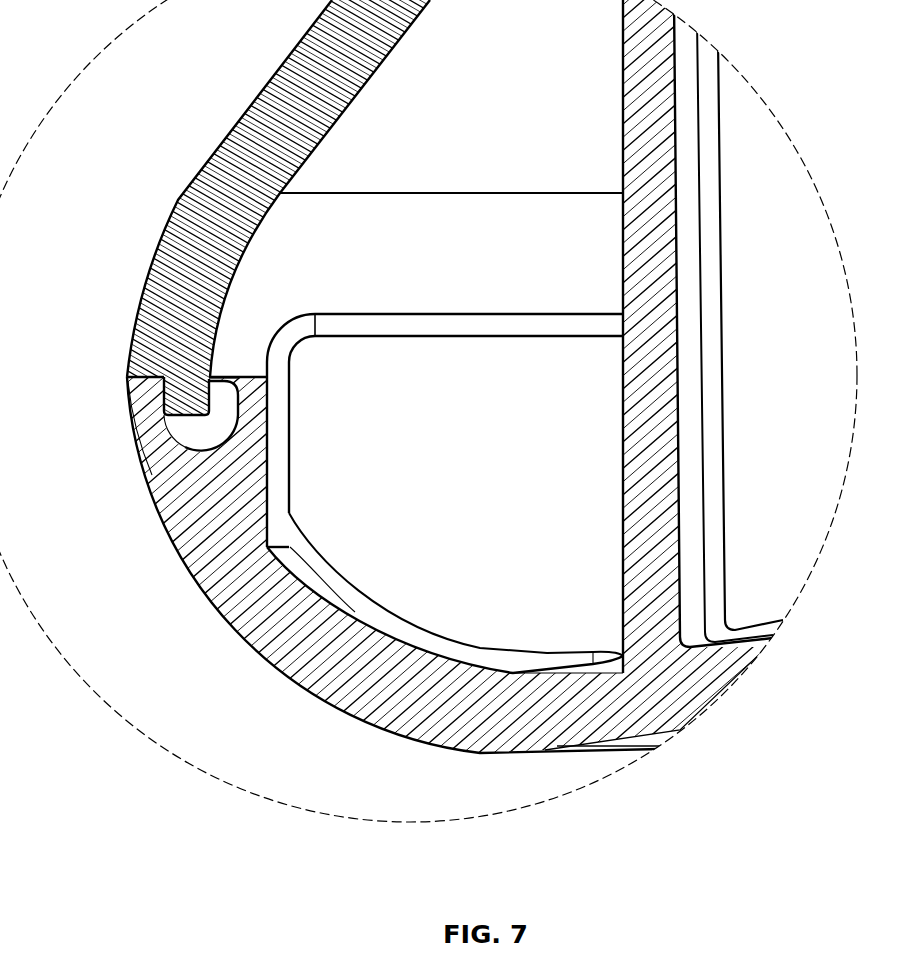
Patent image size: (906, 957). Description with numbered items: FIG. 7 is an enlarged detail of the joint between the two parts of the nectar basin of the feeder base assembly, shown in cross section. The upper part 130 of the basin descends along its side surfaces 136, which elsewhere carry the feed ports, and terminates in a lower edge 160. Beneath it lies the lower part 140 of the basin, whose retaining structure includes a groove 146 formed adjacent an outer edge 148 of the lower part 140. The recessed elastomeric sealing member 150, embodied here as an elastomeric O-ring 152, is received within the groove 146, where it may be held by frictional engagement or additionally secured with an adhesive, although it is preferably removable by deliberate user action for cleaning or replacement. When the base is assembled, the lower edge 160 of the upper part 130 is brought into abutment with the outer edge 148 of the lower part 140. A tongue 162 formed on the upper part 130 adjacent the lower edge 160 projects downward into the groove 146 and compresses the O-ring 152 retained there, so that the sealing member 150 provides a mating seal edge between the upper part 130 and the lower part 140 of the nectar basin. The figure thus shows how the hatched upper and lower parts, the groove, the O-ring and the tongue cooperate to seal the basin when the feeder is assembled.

The upper part 130 is at (207, 177).
The side surfaces 136 is at (265, 87).
The lower part 140 is at (310, 683).
The groove 146 is at (237, 378).
The outer edge 148 is at (143, 421).
The recessed elastomeric sealing member 150 is at (257, 408).
The O-ring 152 is at (232, 425).
The lower edge 160 is at (127, 393).
The tongue 162 is at (182, 458).